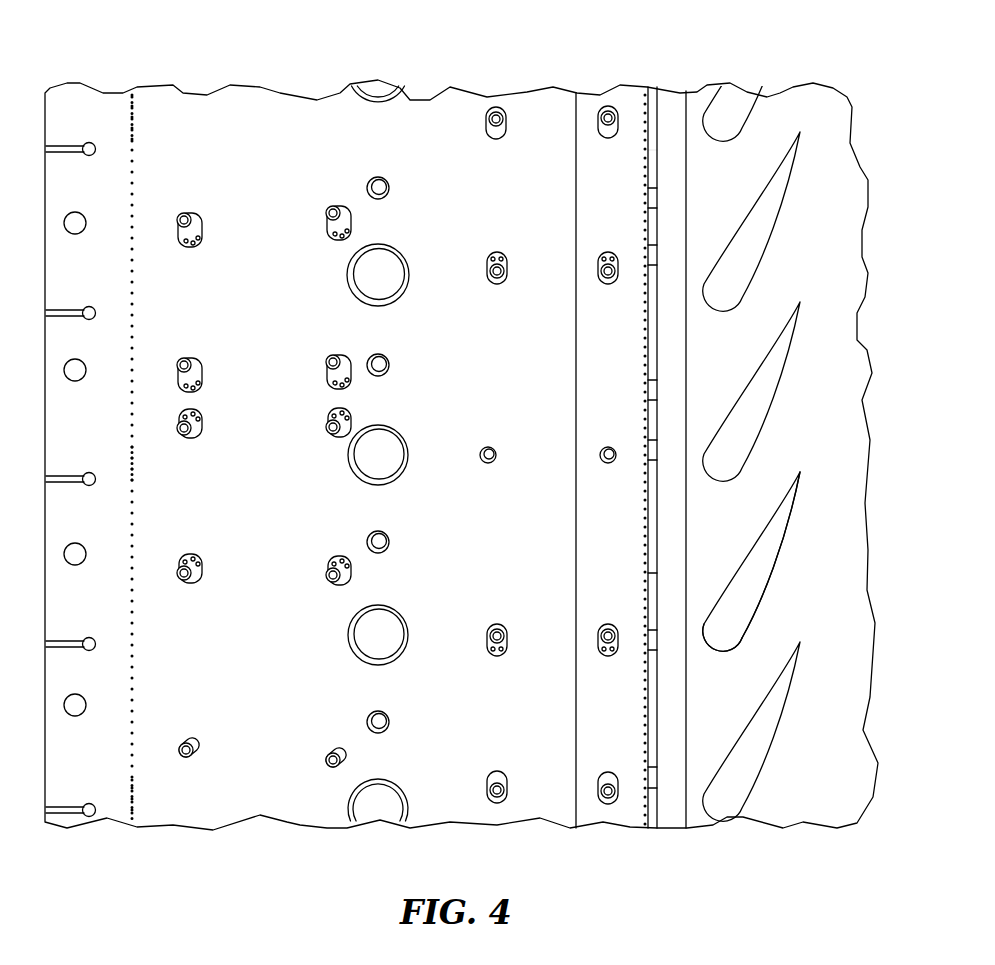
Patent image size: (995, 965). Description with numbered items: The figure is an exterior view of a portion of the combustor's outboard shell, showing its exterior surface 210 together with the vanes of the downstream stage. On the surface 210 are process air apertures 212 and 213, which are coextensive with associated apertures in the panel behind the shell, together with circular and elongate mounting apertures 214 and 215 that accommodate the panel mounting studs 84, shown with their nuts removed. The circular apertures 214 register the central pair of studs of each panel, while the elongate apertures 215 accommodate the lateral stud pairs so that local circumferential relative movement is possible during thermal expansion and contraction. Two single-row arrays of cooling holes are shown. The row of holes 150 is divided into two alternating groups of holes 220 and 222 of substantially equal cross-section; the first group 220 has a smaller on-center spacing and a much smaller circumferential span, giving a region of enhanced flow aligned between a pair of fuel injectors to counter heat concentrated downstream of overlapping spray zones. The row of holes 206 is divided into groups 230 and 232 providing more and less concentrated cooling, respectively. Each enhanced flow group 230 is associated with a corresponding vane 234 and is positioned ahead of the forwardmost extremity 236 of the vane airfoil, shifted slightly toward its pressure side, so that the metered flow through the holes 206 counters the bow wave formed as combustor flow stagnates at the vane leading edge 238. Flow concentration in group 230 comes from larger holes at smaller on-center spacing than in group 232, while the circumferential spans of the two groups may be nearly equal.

The holes 150 is at (133, 167).
The exterior surface 210 is at (314, 172).
The holes 206 is at (648, 165).
The process air aperture 212 is at (383, 279).
The process air aperture 213 is at (375, 368).
The panel mounting stud 84 is at (347, 424).
The circular mounting aperture 214 is at (489, 463).
The elongate mounting aperture 215 is at (487, 270).
The first group of holes 220 is at (140, 445).
The second group of holes 222 is at (140, 490).
The enhanced flow group 230 is at (642, 578).
The group of holes 232 is at (642, 485).
The vane 234 is at (760, 591).
The forwardmost extremity 236 is at (700, 613).
The vane leading edge 238 is at (703, 655).